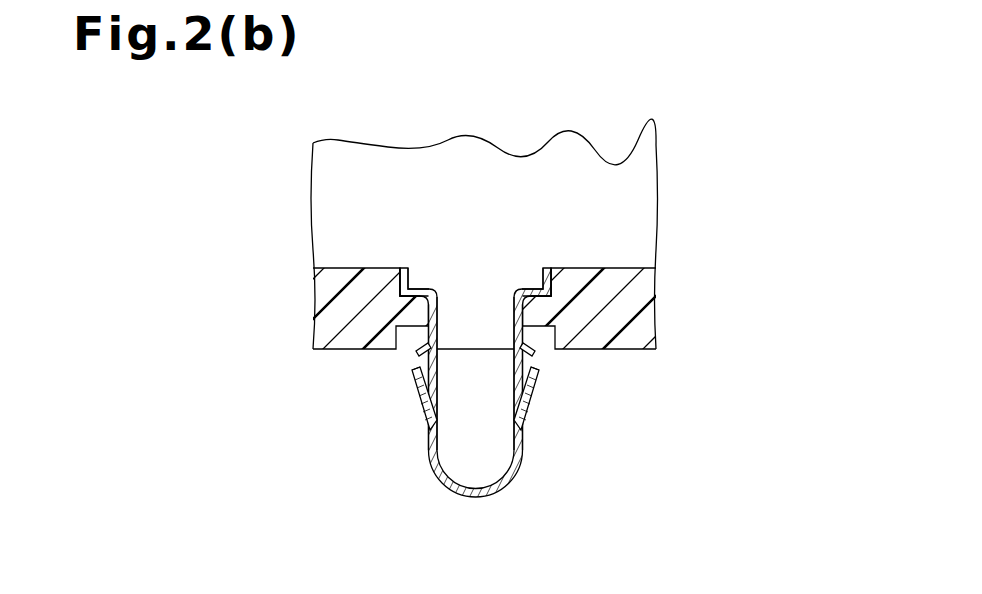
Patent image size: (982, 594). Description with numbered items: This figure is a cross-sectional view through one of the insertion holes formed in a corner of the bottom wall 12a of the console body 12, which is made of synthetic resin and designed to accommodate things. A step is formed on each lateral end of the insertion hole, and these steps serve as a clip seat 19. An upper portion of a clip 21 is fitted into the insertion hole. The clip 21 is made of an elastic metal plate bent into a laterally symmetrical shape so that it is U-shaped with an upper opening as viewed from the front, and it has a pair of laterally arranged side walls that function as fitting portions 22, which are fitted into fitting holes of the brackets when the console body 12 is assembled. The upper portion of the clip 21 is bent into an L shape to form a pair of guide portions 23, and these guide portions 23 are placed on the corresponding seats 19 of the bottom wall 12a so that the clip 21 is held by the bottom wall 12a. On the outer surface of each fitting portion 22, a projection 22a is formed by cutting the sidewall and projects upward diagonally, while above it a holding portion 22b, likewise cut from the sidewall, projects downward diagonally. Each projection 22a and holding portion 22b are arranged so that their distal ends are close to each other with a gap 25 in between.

The console body 12 is at (645, 173).
The bottom wall 12a is at (647, 288).
The clip seat 19 is at (535, 289).
The clip 21 is at (474, 499).
The fitting portion 22 is at (428, 458).
The projection 22a is at (417, 385).
The holding portion 22b is at (417, 352).
The guide portion 23 is at (394, 268).
The gap 25 is at (411, 362).